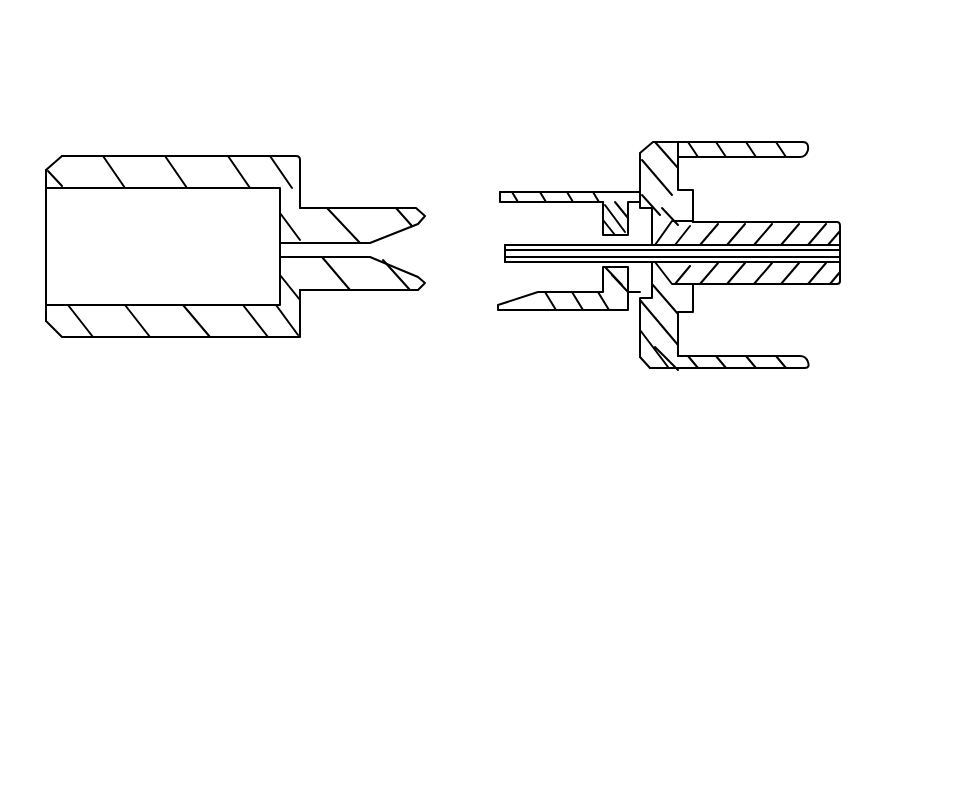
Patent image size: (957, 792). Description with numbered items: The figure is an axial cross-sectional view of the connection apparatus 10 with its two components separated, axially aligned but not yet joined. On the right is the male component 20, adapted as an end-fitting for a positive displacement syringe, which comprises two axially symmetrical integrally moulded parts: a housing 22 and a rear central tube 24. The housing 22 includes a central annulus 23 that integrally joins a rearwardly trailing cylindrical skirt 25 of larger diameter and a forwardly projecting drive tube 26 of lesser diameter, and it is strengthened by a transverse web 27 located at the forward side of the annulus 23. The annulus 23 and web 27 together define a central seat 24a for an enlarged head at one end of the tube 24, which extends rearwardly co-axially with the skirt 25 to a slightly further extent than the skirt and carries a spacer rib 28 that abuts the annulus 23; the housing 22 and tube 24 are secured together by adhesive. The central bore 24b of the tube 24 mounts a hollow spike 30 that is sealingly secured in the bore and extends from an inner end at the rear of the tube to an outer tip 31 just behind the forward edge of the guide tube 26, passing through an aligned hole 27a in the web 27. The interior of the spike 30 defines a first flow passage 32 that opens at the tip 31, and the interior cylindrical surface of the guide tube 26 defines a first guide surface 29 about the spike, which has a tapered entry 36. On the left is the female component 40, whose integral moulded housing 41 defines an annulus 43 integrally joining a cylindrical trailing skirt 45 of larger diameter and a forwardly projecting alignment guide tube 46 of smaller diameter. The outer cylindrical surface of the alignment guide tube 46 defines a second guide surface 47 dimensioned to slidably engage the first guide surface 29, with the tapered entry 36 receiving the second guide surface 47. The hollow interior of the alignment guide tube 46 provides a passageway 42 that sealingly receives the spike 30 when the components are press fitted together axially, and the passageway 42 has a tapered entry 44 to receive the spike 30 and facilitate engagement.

The connection apparatus 10 is at (452, 68).
The male component 20 is at (653, 108).
The housing 22 is at (632, 356).
The central annulus 23 is at (641, 167).
The rear central tube 24 is at (815, 222).
The central seat 24a is at (693, 219).
The central bore 24b is at (806, 265).
The cylindrical skirt 25 is at (783, 142).
The drive tube 26 is at (543, 311).
The transverse web 27 is at (636, 231).
The hole 27a is at (643, 260).
The spacer rib 28 is at (694, 312).
The first guide surface 29 is at (558, 214).
The hollow spike 30 is at (521, 263).
The outer tip 31 is at (503, 243).
The first flow passage 32 is at (773, 258).
The tapered entry 36 is at (516, 206).
The female component 40 is at (240, 126).
The housing 41 is at (246, 348).
The passageway 42 is at (348, 250).
The annulus 43 is at (292, 188).
The tapered entry 44 is at (416, 266).
The trailing skirt 45 is at (146, 337).
The alignment guide tube 46 is at (366, 300).
The second guide surface 47 is at (330, 300).